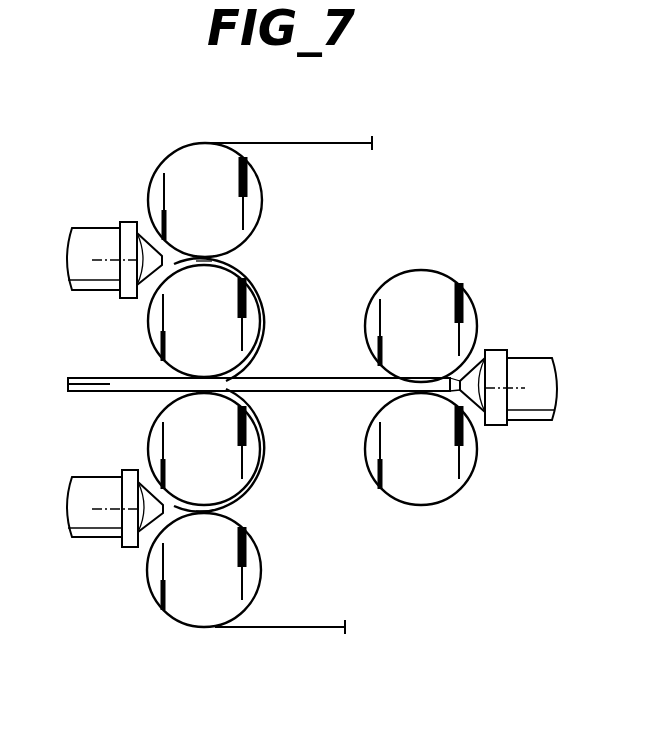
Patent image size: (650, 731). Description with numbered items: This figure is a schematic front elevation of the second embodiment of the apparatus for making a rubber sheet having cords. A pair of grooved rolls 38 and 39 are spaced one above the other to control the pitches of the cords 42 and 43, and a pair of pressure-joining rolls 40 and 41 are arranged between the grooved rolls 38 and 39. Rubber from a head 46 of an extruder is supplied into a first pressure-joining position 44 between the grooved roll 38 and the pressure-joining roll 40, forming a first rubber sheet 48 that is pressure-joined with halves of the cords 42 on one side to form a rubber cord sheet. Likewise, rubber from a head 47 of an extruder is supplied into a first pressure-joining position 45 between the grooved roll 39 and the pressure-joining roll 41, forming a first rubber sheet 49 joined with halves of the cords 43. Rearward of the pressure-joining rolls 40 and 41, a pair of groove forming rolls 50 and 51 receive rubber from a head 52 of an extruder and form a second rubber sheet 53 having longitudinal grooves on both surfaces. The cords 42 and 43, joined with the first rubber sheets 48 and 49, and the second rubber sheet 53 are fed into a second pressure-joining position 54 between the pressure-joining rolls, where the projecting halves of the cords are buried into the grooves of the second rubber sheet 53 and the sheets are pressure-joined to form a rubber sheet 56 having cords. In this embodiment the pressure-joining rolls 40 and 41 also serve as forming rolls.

The grooved roll 38 is at (262, 200).
The grooved roll 39 is at (260, 575).
The pressure-joining roll 40 is at (152, 338).
The pressure-joining roll 41 is at (150, 432).
The cords 42 is at (300, 143).
The cords 43 is at (300, 627).
The first pressure-joining position 44 is at (205, 260).
The first pressure-joining position 45 is at (205, 512).
The head of extruder 46 is at (92, 236).
The head of extruder 47 is at (88, 540).
The first rubber sheet 48 is at (268, 298).
The first rubber sheet 49 is at (268, 470).
The groove forming roll 50 is at (467, 304).
The groove forming roll 51 is at (470, 462).
The head of extruder 52 is at (528, 362).
The second rubber sheet 53 is at (306, 378).
The second pressure-joining position 54 is at (206, 392).
The rubber sheet having cords 56 is at (88, 378).